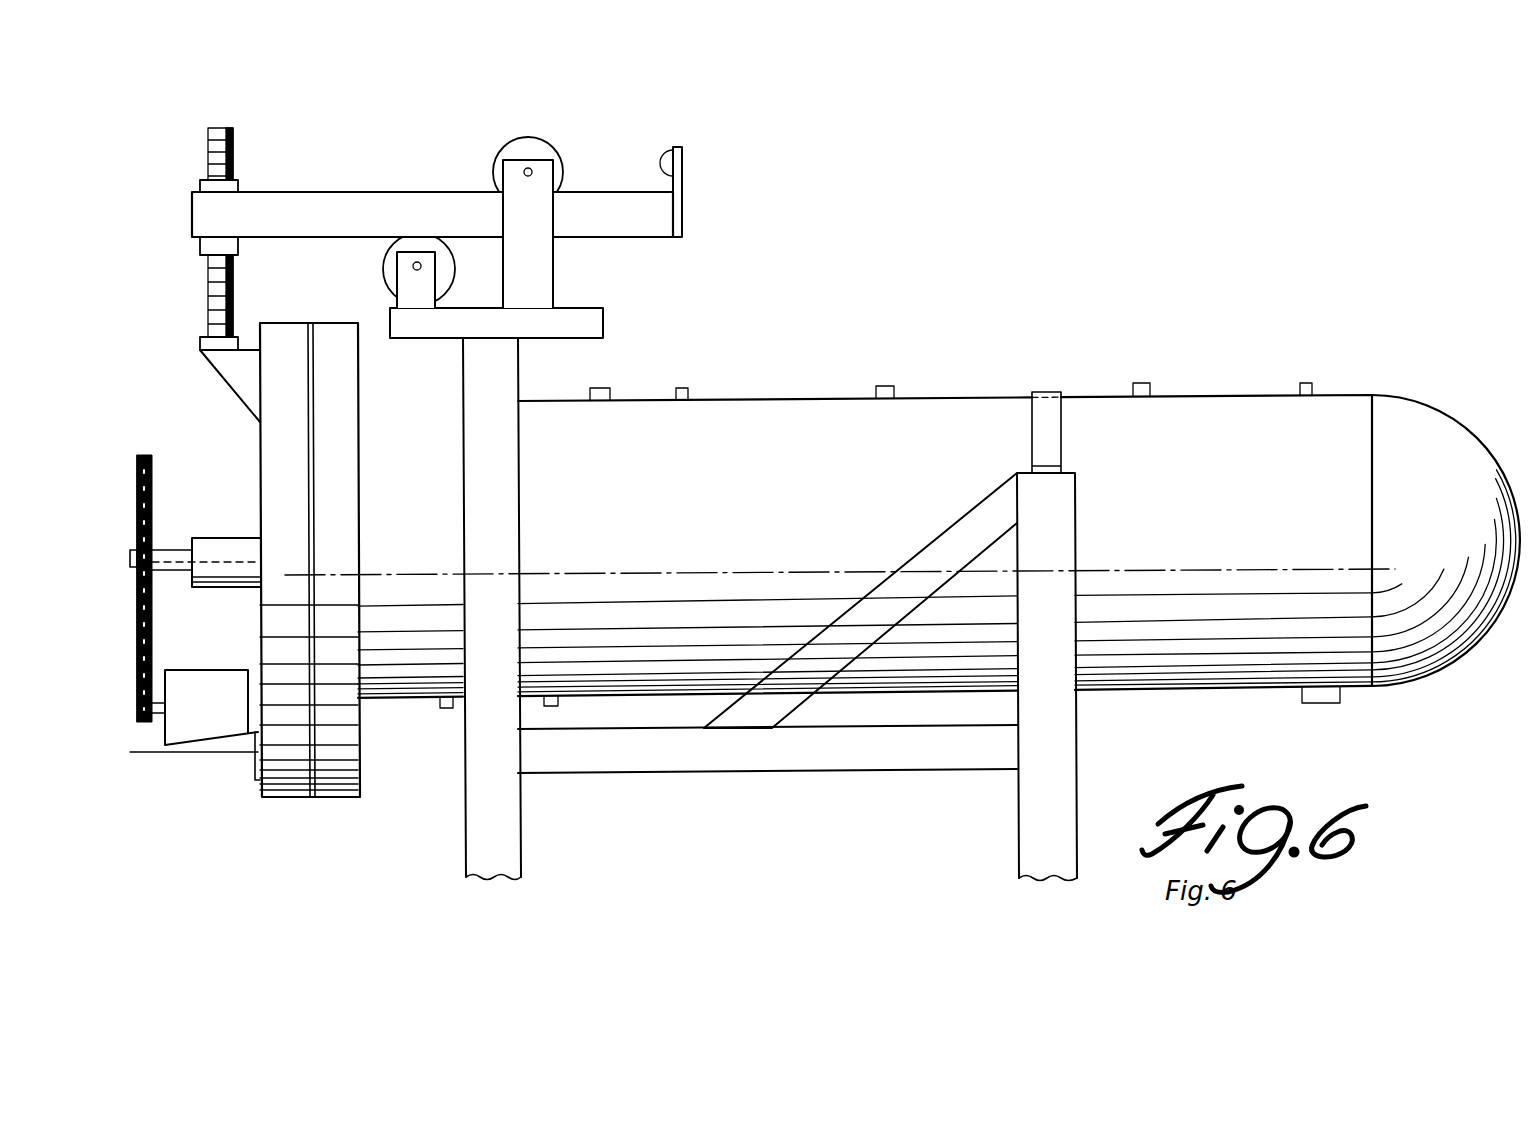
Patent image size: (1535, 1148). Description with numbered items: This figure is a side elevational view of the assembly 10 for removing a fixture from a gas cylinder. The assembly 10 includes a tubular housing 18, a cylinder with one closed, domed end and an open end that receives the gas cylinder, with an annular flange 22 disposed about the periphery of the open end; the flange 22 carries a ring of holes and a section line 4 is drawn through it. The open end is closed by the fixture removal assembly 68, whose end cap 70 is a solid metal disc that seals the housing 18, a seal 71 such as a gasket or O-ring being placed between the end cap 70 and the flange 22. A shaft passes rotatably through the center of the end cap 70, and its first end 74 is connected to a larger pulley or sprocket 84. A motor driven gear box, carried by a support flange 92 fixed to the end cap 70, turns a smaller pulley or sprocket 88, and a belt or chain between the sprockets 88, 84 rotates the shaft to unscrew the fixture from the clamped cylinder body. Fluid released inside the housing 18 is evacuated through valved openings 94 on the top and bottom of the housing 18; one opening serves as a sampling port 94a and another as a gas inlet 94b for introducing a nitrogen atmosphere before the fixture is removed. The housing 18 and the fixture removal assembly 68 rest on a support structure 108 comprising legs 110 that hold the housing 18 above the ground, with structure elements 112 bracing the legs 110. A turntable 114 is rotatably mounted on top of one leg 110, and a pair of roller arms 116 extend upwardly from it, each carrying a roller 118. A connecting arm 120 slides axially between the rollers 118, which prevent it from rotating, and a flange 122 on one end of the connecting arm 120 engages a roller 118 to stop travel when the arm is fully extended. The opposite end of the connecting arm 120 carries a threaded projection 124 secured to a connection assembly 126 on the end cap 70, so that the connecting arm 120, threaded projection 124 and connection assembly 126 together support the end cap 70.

The section line 4- 4 is at (365, 298).
The assembly 10 is at (1060, 352).
The tubular housing 18 is at (1205, 396).
The annular flange 22 is at (345, 488).
The fixture removal assembly 68 is at (220, 538).
The end cap 70 is at (275, 792).
The seal 71 is at (310, 550).
The first end of shaft 74 is at (155, 550).
The pulley or sprocket 84 is at (153, 462).
The smaller pulley or sprocket 88 is at (146, 722).
The support flange 92 is at (215, 750).
The openings 94 is at (898, 386).
The sampling port 94a is at (1312, 383).
The gas inlet 94b is at (690, 388).
The support structure 108 is at (523, 400).
The legs 110 is at (505, 838).
The structure elements 112 is at (845, 735).
The turntable 114 is at (600, 322).
The roller arms 116 is at (543, 265).
The rollers 118 is at (553, 165).
The connecting arm 120 is at (425, 192).
The flange 122 is at (683, 172).
The threaded projection 124 is at (212, 283).
The connection assembly 126 is at (230, 368).